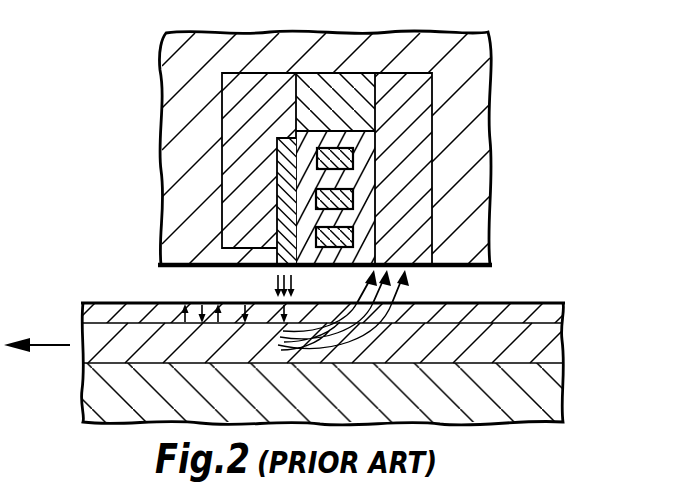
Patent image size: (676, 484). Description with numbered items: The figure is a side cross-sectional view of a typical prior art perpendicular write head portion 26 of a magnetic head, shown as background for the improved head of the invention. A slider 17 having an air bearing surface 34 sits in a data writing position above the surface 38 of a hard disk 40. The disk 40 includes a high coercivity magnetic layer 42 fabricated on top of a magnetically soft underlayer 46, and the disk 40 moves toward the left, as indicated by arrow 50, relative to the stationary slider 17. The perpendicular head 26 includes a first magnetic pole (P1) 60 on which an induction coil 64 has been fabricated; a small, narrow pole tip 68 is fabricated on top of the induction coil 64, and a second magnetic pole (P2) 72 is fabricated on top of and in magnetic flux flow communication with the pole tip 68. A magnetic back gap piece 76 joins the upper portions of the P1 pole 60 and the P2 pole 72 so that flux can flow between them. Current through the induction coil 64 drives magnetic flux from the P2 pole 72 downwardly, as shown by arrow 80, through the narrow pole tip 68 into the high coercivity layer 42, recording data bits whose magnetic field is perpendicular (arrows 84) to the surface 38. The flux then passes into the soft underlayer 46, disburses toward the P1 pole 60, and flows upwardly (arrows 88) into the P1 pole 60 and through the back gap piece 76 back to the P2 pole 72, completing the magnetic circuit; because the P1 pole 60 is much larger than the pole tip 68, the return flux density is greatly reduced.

The slider 17 is at (466, 154).
The perpendicular write head portion 26 is at (140, 117).
The air bearing surface 34 is at (484, 264).
The surface of the hard disk 38 is at (503, 301).
The hard disk 40 is at (543, 389).
The high coercivity magnetic layer 42 is at (508, 317).
The magnetically soft underlayer 46 is at (546, 355).
The arrow 50 is at (70, 341).
The first magnetic pole (P1) 60 is at (405, 86).
The induction coil 64 is at (331, 143).
The pole tip 68 is at (266, 268).
The second magnetic pole (P2) 72 is at (237, 149).
The magnetic back gap piece 76 is at (353, 93).
The magnetic flux 80 is at (300, 281).
The arrows 84 is at (210, 304).
The arrows 88 is at (409, 285).